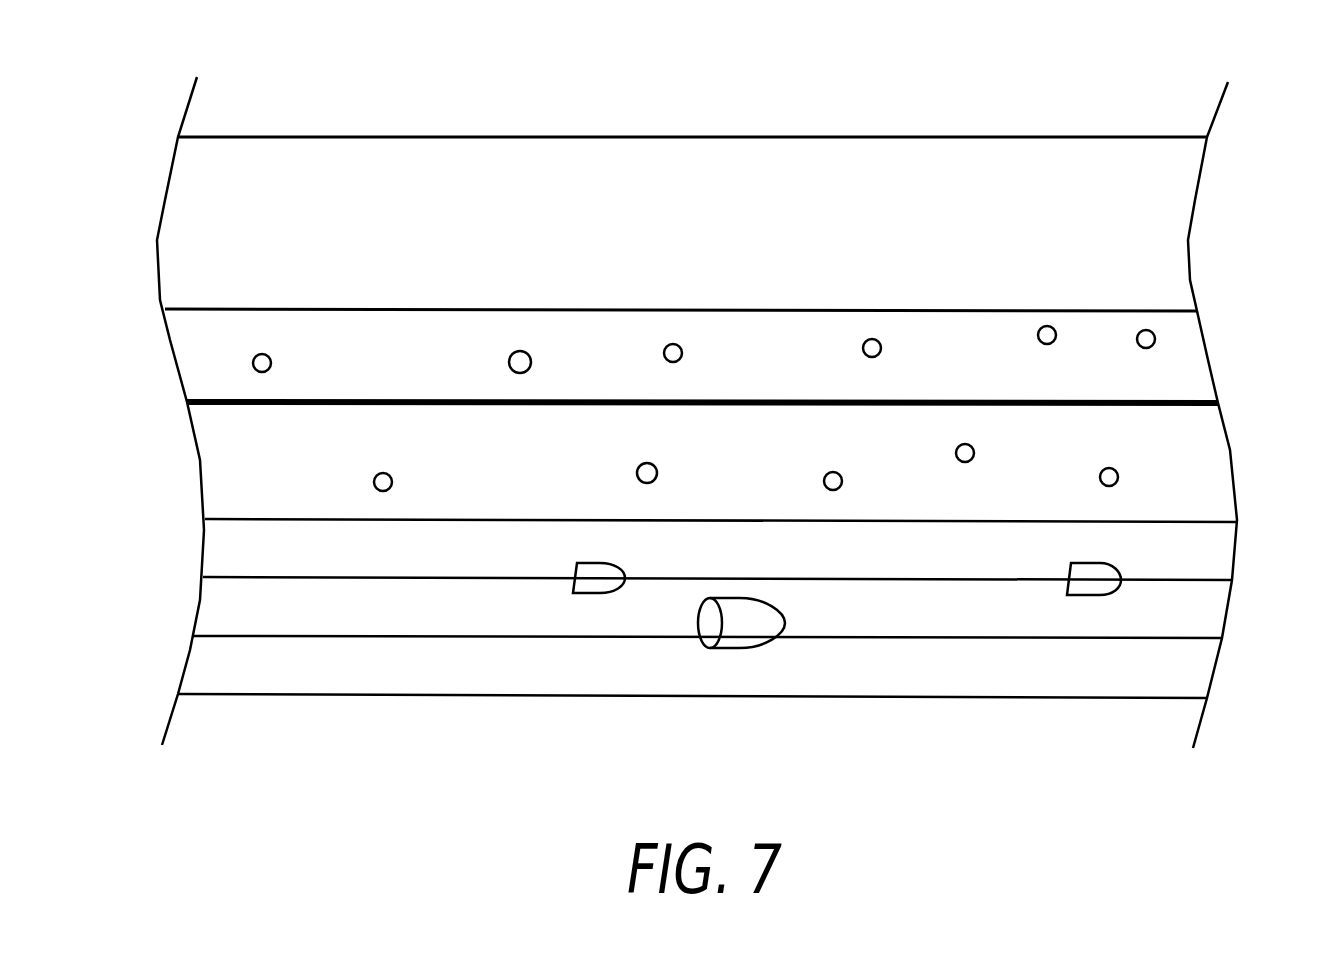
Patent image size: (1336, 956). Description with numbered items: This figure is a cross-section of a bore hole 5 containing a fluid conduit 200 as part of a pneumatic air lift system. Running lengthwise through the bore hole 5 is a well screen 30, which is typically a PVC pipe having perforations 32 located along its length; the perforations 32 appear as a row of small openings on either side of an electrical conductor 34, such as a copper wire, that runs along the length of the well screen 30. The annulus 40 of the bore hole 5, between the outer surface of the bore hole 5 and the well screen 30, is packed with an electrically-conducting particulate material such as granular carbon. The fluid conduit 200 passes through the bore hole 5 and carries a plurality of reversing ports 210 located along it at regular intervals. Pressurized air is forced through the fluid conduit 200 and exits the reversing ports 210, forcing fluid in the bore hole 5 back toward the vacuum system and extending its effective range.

The bore hole 5 is at (993, 137).
The well screen 30 is at (353, 308).
The perforations 32 is at (678, 345).
The electrical conductor 34 is at (777, 400).
The annulus 40 is at (540, 207).
The fluid conduit 200 is at (415, 637).
The reversing ports 210 is at (598, 568).